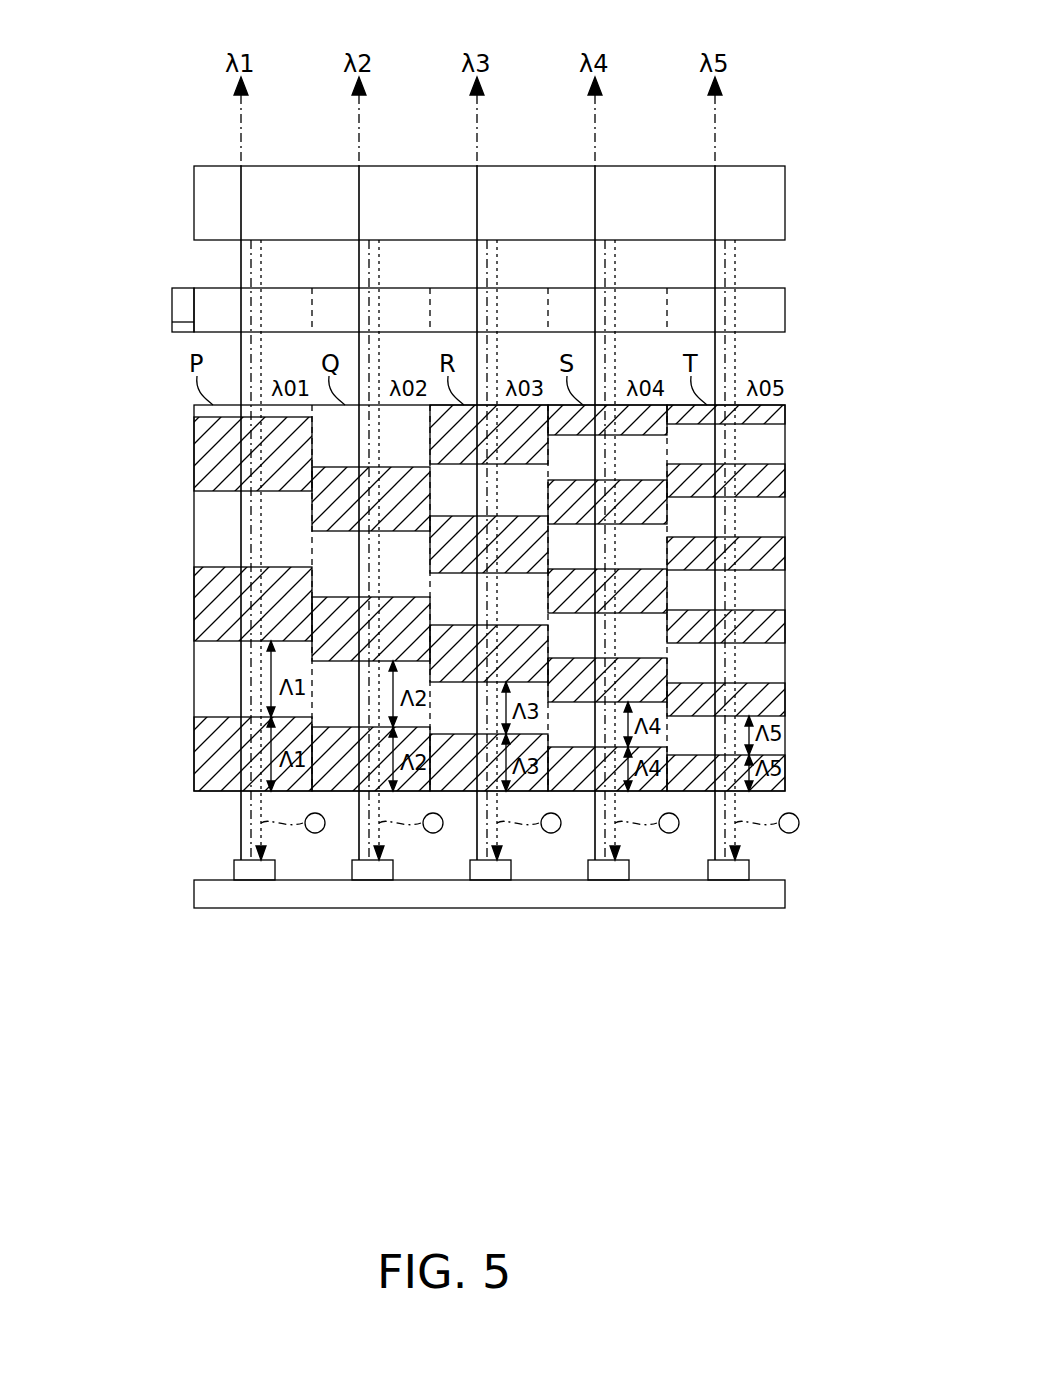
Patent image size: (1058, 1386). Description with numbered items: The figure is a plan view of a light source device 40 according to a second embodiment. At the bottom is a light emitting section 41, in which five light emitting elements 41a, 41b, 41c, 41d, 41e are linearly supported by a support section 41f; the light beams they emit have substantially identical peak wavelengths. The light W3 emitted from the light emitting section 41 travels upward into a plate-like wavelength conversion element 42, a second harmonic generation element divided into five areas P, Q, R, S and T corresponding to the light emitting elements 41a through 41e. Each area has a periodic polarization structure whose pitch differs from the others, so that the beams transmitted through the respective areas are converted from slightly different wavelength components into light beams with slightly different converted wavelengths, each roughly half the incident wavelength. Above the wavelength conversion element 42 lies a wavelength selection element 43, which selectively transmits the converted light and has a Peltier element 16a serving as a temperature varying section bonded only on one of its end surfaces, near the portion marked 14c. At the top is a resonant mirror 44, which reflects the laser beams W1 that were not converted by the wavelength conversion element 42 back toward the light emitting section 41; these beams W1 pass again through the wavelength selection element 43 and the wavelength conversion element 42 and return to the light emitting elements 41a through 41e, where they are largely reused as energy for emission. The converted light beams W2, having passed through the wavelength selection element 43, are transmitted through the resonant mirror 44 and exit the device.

The light source device 40 is at (765, 66).
The light emitting section 41 is at (466, 909).
The light emitting element 41a is at (248, 875).
The light emitting element 41b is at (366, 875).
The light emitting element 41c is at (484, 875).
The light emitting element 41d is at (602, 875).
The light emitting element 41e is at (722, 875).
The support section 41f is at (787, 893).
The wavelength conversion element 42 is at (787, 440).
The wavelength selection element 43 is at (787, 316).
The resonant mirror 44 is at (775, 196).
The Peltier element 16a is at (182, 302).
The substrate portion 14c is at (173, 322).
The laser beams W1 is at (261, 262).
The light beams W2 is at (241, 128).
The light W3 is at (241, 816).